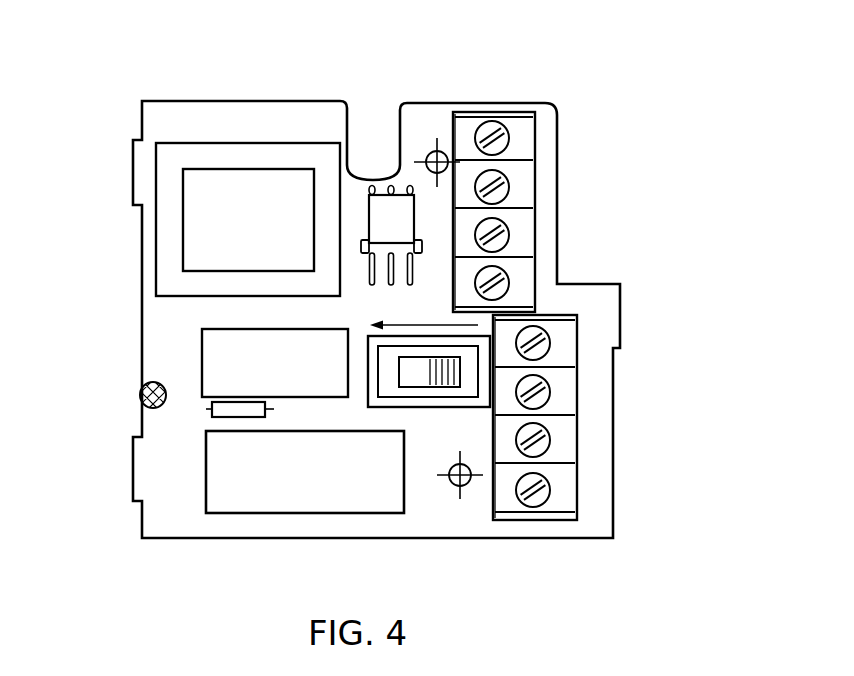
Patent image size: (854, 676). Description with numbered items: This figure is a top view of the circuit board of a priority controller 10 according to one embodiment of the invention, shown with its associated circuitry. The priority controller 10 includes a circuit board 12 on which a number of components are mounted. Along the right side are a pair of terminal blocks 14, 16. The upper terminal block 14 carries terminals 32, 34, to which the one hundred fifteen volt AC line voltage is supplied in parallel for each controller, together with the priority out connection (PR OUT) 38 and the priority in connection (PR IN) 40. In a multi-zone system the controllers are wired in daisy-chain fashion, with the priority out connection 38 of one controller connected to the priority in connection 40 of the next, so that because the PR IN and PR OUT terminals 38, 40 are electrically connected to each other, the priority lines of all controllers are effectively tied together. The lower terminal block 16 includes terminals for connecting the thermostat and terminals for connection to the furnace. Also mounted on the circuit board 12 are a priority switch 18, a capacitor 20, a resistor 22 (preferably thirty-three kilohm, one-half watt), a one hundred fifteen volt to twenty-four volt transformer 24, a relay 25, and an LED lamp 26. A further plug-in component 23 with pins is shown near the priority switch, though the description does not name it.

The priority controller 10 is at (115, 92).
The circuit board 12 is at (558, 225).
The terminal block 14 is at (558, 105).
The terminal block 16 is at (575, 488).
The priority switch 18 is at (412, 387).
The capacitor 20 is at (295, 513).
The resistor 22 is at (203, 410).
The plug-in relay component 23 is at (394, 192).
The transformer 24 is at (155, 165).
The relay 25 is at (200, 345).
The LED lamp 26 is at (142, 382).
The terminal 32 is at (520, 186).
The terminal 34 is at (522, 140).
The priority out connection 38 is at (522, 247).
The priority in connection 40 is at (522, 290).